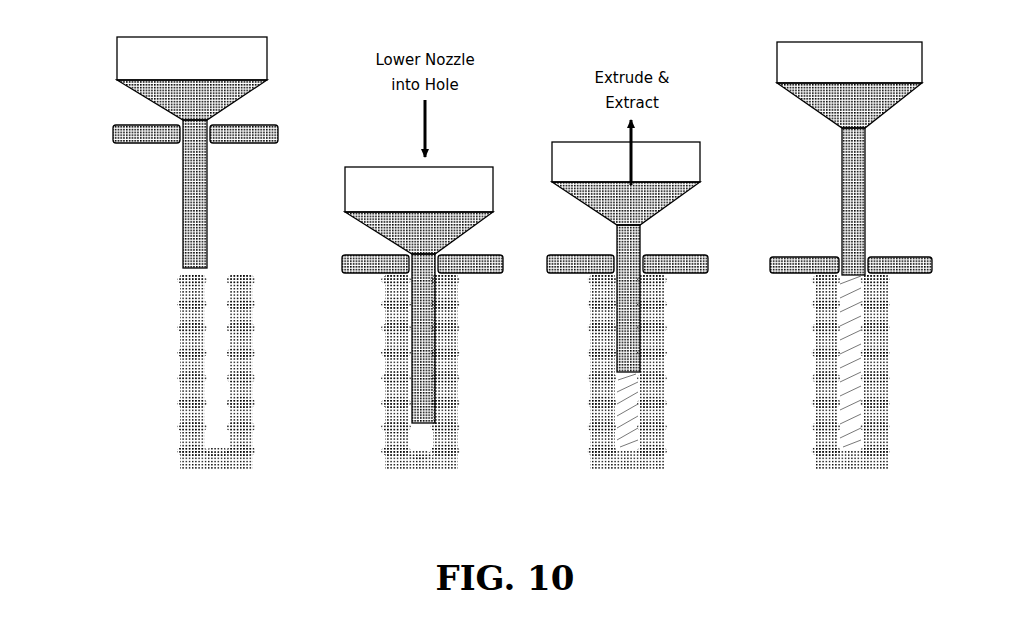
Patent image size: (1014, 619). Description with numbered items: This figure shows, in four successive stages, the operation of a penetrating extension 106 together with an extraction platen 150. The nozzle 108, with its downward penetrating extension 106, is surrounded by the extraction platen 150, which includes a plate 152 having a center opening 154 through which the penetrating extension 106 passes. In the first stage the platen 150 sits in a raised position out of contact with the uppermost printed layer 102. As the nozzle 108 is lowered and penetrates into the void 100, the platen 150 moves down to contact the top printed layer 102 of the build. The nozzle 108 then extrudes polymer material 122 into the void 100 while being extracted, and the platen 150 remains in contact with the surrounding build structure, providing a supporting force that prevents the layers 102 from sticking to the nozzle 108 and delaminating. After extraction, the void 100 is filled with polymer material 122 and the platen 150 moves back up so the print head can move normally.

The void 100 is at (511, 353).
The top printed layer 102 is at (180, 278).
The penetrating extension 106 is at (183, 218).
The nozzle 108 is at (266, 108).
The polymer material 122 is at (630, 415).
The extraction platen 150 is at (491, 180).
The plate 152 is at (142, 145).
The center opening 154 is at (210, 143).